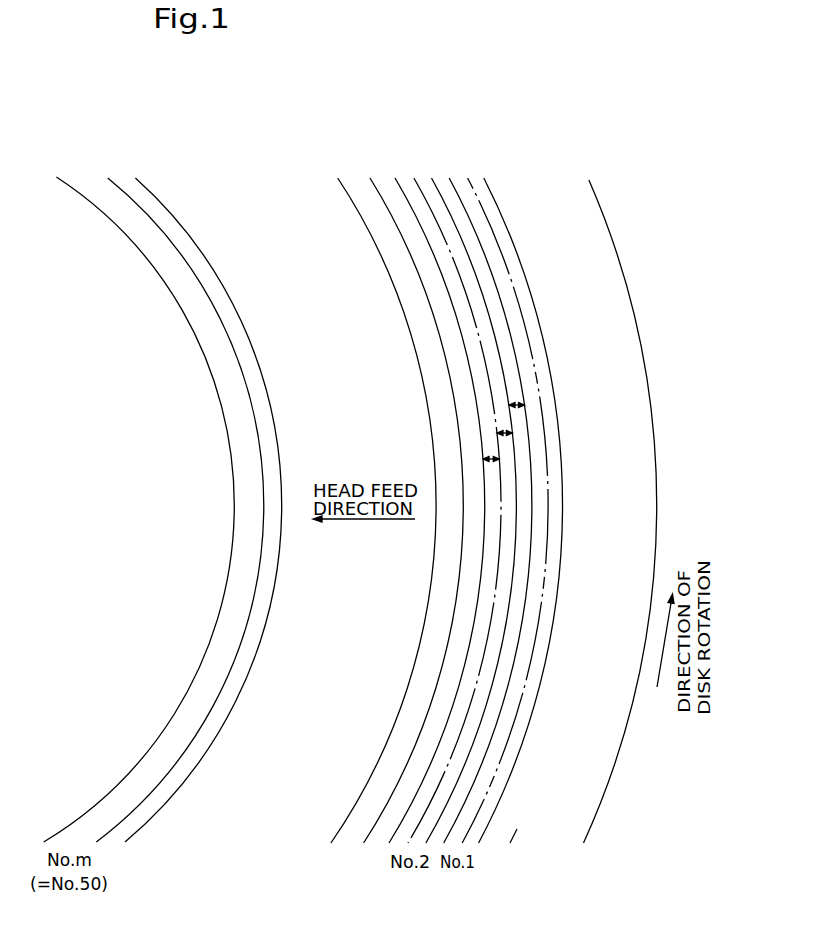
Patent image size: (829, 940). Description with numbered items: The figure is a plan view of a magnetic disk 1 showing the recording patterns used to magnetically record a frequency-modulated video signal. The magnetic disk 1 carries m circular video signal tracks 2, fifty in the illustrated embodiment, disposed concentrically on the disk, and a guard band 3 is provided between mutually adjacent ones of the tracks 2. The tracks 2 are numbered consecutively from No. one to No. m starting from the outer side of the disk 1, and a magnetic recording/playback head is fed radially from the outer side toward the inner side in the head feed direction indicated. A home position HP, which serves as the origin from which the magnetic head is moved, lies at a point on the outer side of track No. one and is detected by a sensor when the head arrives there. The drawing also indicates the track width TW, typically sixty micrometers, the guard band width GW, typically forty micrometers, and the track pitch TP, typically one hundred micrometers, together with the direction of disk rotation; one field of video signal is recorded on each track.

The magnetic disk 1 is at (626, 294).
The video signal tracks 2 is at (95, 176).
The guard band 3 is at (133, 176).
The track width TW is at (555, 401).
The guard band width GW is at (528, 431).
The track pitch TP is at (546, 456).
The home position HP is at (507, 850).